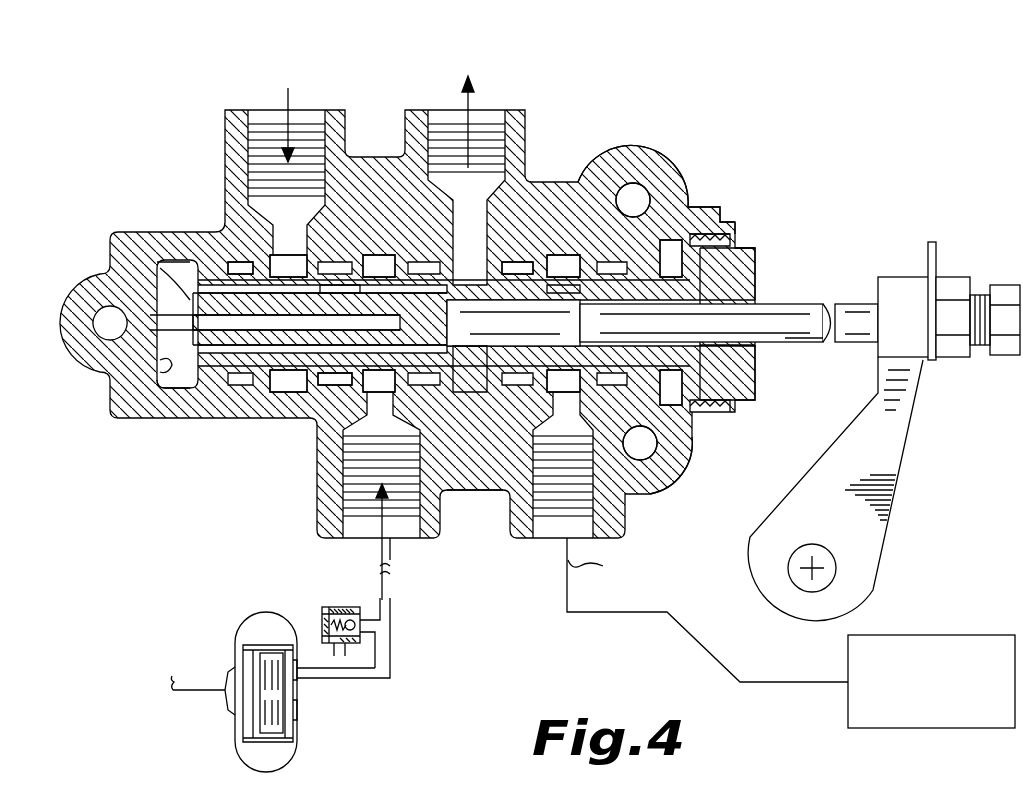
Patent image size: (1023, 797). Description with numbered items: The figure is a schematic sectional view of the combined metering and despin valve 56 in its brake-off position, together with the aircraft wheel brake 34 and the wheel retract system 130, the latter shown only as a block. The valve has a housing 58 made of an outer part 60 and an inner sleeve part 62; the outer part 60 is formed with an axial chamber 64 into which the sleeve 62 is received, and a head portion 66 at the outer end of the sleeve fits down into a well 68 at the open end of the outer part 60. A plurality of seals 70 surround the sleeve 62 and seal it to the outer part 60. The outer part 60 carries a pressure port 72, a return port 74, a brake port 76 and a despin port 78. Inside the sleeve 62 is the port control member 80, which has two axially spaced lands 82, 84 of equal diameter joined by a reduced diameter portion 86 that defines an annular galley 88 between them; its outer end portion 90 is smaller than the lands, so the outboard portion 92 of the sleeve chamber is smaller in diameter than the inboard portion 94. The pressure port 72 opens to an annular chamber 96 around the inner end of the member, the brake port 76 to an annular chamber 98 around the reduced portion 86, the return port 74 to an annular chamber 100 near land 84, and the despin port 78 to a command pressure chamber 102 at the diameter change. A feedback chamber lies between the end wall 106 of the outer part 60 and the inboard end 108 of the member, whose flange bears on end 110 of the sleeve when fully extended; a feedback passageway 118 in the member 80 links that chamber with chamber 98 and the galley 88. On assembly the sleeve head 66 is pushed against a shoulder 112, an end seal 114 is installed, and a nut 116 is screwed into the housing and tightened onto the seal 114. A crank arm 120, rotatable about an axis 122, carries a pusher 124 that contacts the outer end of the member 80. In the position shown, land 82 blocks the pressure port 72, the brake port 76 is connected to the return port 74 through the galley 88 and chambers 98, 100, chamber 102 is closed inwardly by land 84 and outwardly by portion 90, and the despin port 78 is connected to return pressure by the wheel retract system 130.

The brake 34 is at (297, 700).
The combined metering and despin valve 56 is at (538, 143).
The housing 58 is at (133, 424).
The outer housing part 60 is at (230, 395).
The inner sleeve part 62 is at (700, 210).
The axial chamber 64 is at (395, 332).
The head portion 66 is at (737, 252).
The well 68 is at (695, 440).
The seals 70 is at (235, 262).
The pressure port 72 is at (255, 108).
The return port 74 is at (508, 110).
The brake port 76 is at (363, 522).
The despin port 78 is at (553, 522).
The port control member 80 is at (752, 322).
The land 82 is at (275, 340).
The land 84 is at (506, 348).
The reduced diameter portion 86 is at (462, 490).
The annular galley 88 is at (343, 292).
The outer end portion 90 is at (792, 340).
The outboard chamber portion 92 is at (688, 468).
The inboard chamber portion 94 is at (562, 296).
The annular chamber 96 is at (232, 258).
The annular chamber 98 is at (335, 390).
The annular chamber 100 is at (518, 262).
The annular chamber 102 is at (617, 165).
The end wall 106 is at (155, 378).
The inboard end 108 is at (125, 262).
The end of sleeve 110 is at (168, 272).
The shoulder 112 is at (712, 240).
The end seal 114 is at (735, 390).
The nut 116 is at (752, 262).
The feedback passageway 118 is at (196, 406).
The crank arm 120 is at (898, 466).
The axis 122 is at (828, 573).
The pusher 124 is at (850, 304).
The wheel retract system 130 is at (848, 708).